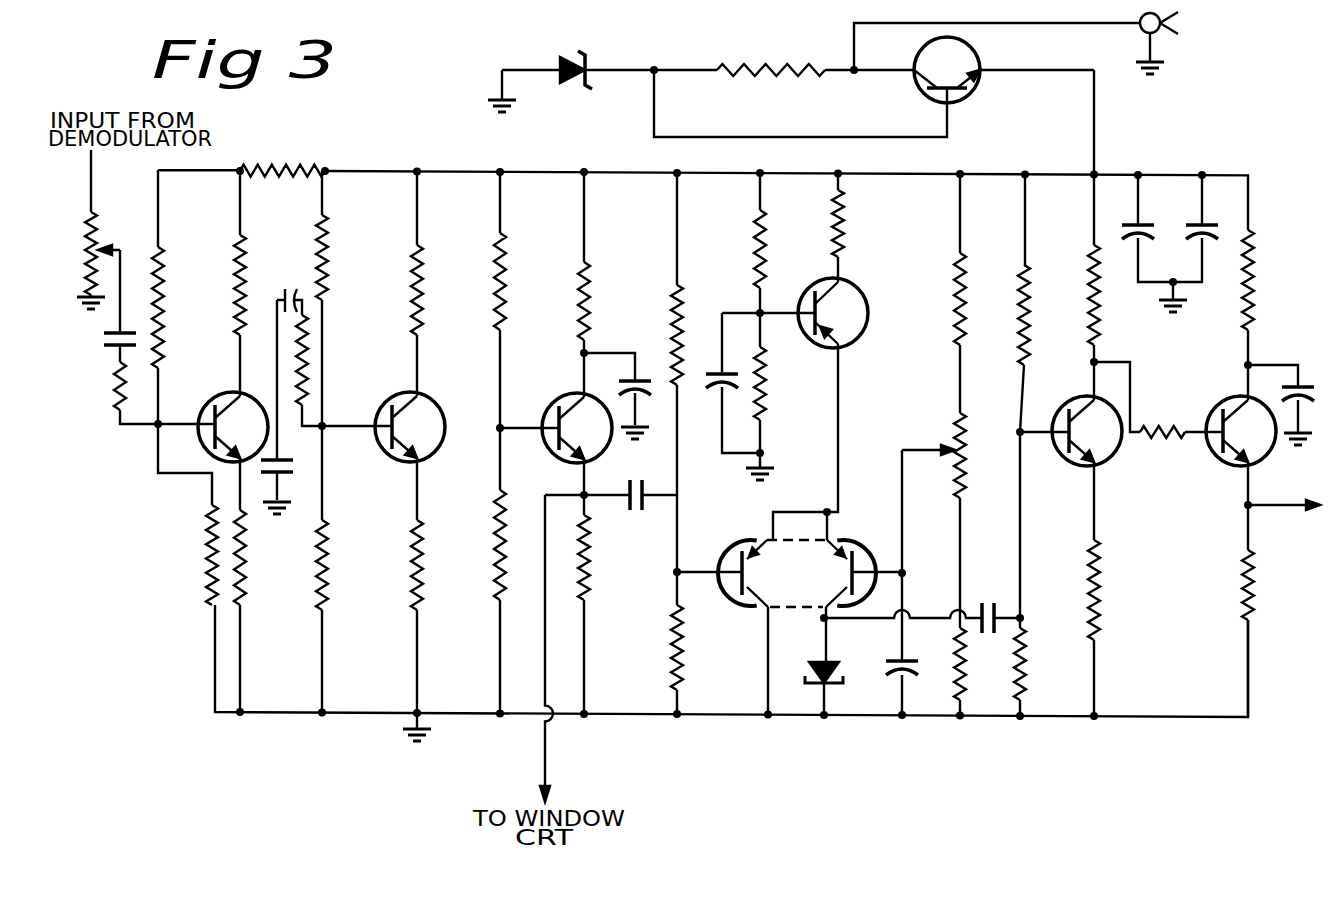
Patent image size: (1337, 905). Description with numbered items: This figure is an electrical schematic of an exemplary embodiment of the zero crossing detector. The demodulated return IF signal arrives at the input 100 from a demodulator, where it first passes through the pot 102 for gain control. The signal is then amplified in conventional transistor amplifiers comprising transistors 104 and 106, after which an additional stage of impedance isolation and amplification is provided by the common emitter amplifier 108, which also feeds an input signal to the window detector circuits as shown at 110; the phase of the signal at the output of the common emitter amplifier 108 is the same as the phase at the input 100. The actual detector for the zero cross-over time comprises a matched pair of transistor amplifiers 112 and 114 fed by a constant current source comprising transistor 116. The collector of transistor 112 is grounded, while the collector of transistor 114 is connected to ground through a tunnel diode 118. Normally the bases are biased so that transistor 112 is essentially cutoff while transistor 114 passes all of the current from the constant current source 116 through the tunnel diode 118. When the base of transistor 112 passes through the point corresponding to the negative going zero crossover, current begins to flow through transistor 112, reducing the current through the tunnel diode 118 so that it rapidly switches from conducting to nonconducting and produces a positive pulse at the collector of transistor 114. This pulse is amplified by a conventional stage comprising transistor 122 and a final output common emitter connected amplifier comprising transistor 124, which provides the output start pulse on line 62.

The input from demodulator 100 is at (93, 168).
The pot 102 is at (110, 262).
The transistor 104 is at (236, 392).
The transistor 106 is at (406, 392).
The common emitter amplifier 108 is at (572, 394).
The input signal to the window detector circuits 110 is at (547, 752).
The transistor amplifier 112 is at (722, 598).
The transistor amplifier 114 is at (880, 535).
The constant current source transistor 116 is at (866, 296).
The tunnel diode 118 is at (838, 673).
The transistor 122 is at (1060, 462).
The transistor 124 is at (1208, 460).
The line 62 is at (1268, 512).